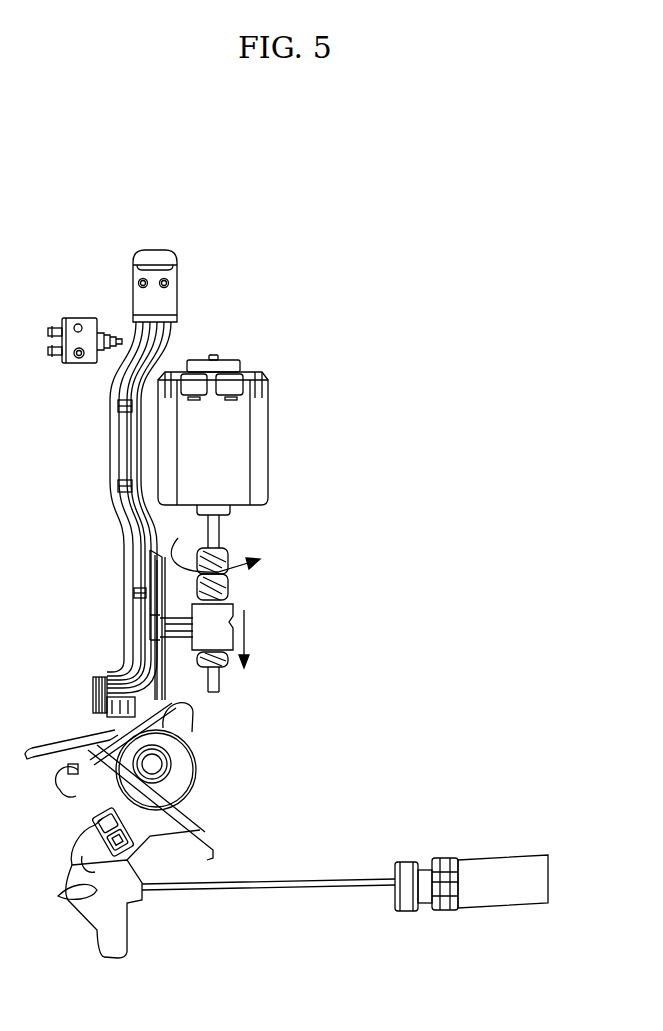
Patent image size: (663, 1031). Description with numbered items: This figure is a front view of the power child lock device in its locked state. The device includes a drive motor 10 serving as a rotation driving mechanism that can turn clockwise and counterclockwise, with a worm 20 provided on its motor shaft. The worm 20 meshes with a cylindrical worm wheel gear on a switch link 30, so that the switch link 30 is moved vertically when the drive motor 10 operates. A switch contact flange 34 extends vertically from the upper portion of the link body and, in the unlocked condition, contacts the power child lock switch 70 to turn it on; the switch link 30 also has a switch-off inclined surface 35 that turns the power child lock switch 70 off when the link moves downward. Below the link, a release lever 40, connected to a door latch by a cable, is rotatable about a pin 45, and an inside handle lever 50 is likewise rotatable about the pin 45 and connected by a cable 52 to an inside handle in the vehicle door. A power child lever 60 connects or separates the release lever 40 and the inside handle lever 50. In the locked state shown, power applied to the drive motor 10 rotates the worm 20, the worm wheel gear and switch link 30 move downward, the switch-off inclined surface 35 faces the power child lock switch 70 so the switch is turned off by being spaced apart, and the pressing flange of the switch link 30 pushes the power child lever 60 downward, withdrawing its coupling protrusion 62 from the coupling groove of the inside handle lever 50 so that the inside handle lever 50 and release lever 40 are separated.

The drive motor 10 is at (260, 430).
The worm 20 is at (228, 590).
The switch link 30 is at (95, 470).
The switch contact flange 34 is at (110, 428).
The switch-off inclined surface 35 is at (135, 338).
The release lever 40 is at (47, 750).
The pin 45 is at (165, 768).
The inside handle lever 50 is at (120, 938).
The cable 52 is at (330, 886).
The power child lever 60 is at (80, 842).
The coupling protrusion 62 is at (82, 858).
The power child lock switch 70 is at (68, 318).